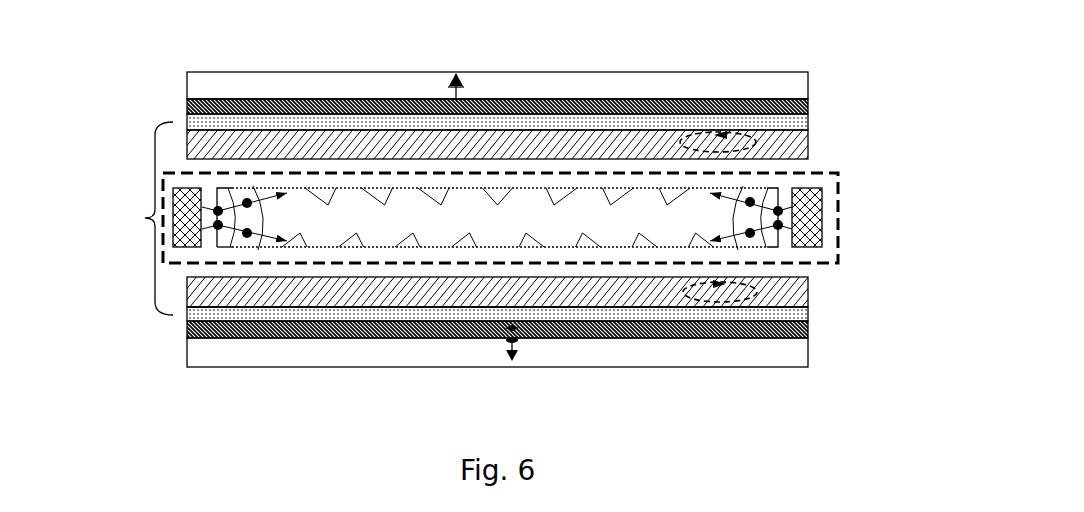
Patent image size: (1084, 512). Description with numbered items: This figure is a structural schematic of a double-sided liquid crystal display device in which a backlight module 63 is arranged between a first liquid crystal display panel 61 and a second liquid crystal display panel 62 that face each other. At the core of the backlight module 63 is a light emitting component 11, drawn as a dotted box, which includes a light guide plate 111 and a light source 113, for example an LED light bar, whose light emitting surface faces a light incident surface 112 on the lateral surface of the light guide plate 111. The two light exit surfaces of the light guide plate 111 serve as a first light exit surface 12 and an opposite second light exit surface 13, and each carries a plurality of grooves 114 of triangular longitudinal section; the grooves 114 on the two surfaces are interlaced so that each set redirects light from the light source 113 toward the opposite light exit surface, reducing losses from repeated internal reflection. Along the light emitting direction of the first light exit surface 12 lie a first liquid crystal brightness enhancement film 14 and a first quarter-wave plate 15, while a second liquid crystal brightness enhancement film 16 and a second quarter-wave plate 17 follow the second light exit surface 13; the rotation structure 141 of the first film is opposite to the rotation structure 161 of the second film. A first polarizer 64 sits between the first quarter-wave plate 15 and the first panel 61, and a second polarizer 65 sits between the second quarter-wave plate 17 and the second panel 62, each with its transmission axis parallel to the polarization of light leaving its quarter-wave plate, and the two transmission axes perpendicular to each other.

The light emitting component 11 is at (838, 202).
The first light exit surface 12 is at (768, 188).
The second light exit surface 13 is at (744, 248).
The first liquid crystal brightness enhancement film 14 is at (795, 148).
The rotation structure 141 is at (763, 99).
The first quarter-wave plate 15 is at (800, 120).
The second liquid crystal brightness enhancement film 16 is at (797, 287).
The rotation structure 161 is at (737, 306).
The second quarter-wave plate 17 is at (804, 317).
The first liquid crystal display panel 61 is at (558, 83).
The second liquid crystal display panel 62 is at (535, 347).
The backlight module 63 is at (143, 218).
The first polarizer 64 is at (683, 99).
The second polarizer 65 is at (658, 335).
The light guide plate 111 is at (290, 205).
The light incident surface 112 is at (217, 208).
The light source 113 is at (177, 217).
The grooves 114 is at (497, 205).